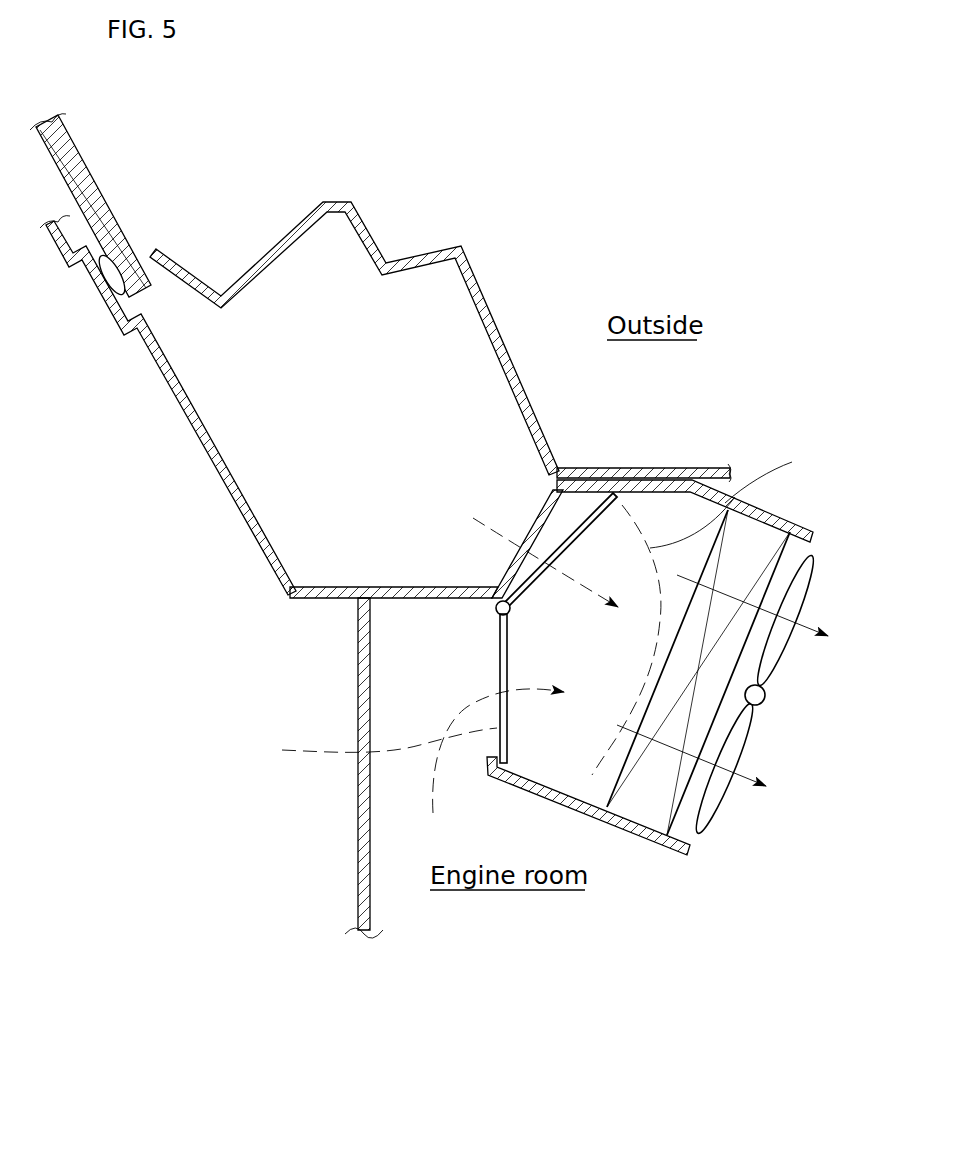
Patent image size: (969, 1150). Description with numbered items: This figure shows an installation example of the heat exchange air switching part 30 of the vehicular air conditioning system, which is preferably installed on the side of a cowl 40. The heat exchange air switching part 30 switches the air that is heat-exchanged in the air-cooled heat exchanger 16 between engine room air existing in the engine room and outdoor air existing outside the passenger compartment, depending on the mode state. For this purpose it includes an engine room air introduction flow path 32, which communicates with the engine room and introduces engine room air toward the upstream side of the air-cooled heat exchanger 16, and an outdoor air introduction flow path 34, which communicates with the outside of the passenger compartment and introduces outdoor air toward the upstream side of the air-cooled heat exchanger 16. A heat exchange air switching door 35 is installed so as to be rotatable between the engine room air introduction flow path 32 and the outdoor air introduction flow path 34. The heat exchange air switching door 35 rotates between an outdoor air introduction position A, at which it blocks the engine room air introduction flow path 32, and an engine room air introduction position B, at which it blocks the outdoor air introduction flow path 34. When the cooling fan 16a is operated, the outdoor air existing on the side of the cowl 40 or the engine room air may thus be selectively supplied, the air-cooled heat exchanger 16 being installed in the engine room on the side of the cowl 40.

The cowl 40 is at (470, 254).
The heat exchange air switching part 30 is at (799, 502).
The outdoor air introduction flow path 34 is at (550, 527).
The heat exchange air switching door 35 is at (615, 500).
The engine room air introduction flow path 32 is at (484, 650).
The air-cooled heat exchanger 16 is at (648, 815).
The cooling fan 16a is at (716, 794).
The outdoor air introduction position A is at (371, 746).
The engine room air introduction position B is at (778, 474).